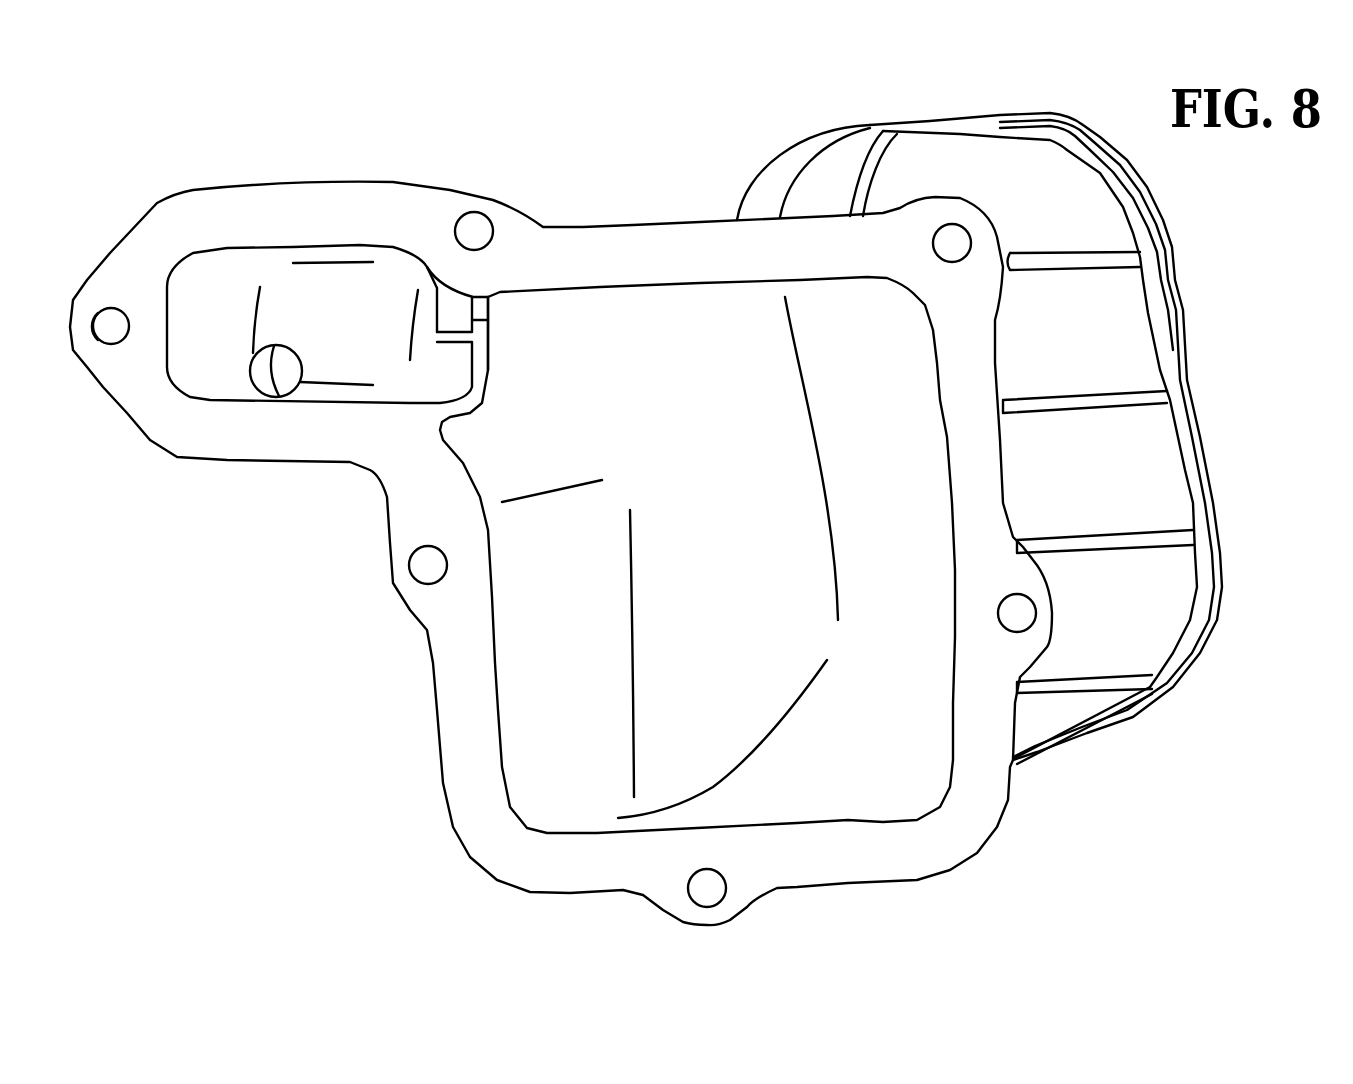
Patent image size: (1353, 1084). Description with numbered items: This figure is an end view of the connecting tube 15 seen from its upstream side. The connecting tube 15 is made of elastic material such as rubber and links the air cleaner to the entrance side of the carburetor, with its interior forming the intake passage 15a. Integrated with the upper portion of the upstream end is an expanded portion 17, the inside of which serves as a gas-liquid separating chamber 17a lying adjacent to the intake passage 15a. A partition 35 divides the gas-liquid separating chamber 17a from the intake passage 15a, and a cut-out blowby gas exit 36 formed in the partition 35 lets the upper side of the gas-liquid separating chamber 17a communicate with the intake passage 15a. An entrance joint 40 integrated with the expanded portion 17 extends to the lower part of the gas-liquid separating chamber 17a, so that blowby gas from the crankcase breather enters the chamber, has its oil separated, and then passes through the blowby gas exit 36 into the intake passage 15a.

The connecting tube 15 is at (1147, 377).
The intake passage 15a is at (897, 395).
The expanded portion 17 is at (243, 213).
The gas-liquid separating chamber 17a is at (353, 322).
The partition 35 is at (483, 355).
The blowby gas exit 36 is at (486, 305).
The entrance joint 40 is at (272, 380).